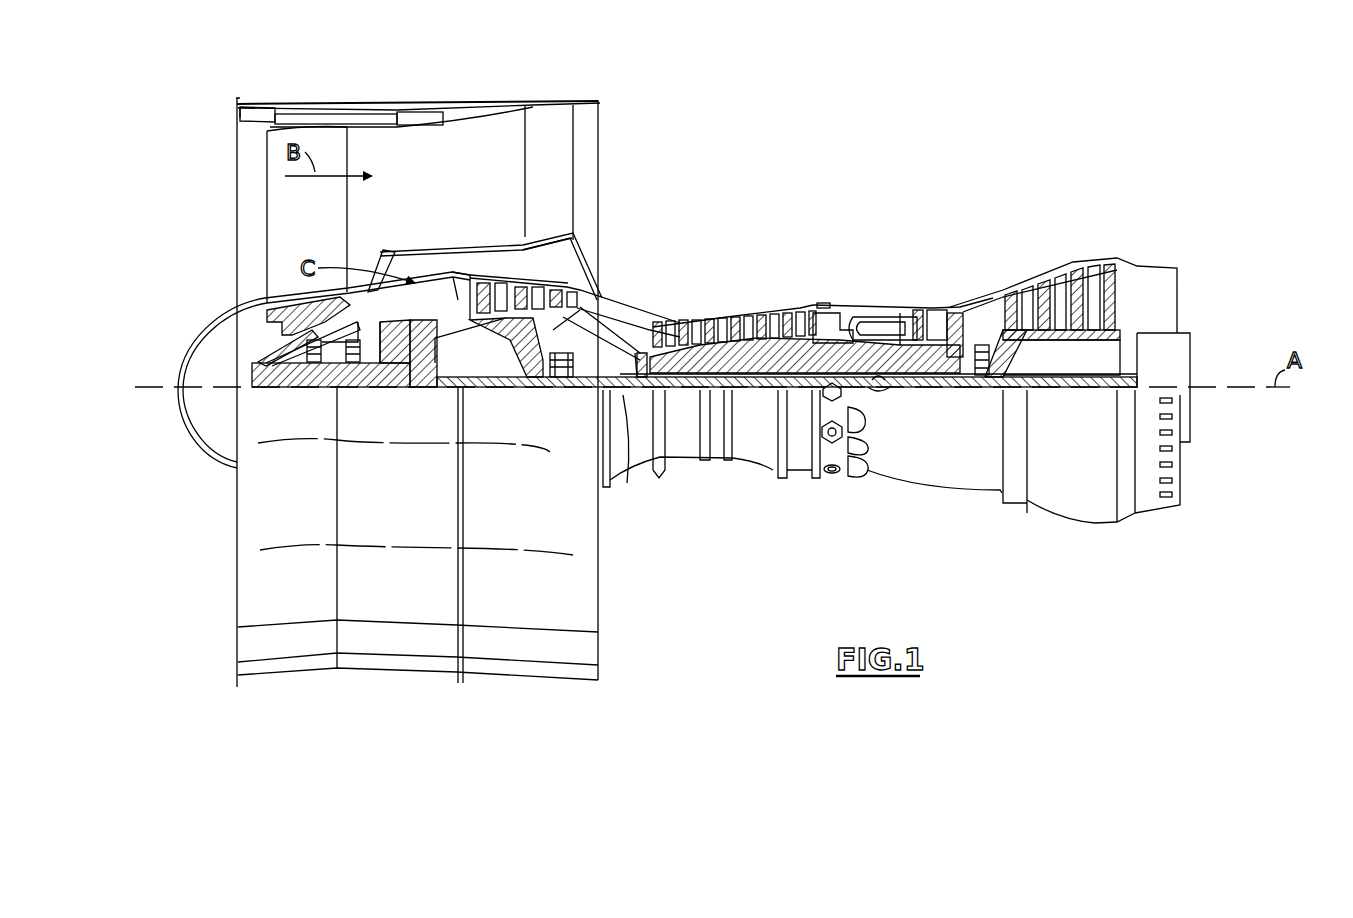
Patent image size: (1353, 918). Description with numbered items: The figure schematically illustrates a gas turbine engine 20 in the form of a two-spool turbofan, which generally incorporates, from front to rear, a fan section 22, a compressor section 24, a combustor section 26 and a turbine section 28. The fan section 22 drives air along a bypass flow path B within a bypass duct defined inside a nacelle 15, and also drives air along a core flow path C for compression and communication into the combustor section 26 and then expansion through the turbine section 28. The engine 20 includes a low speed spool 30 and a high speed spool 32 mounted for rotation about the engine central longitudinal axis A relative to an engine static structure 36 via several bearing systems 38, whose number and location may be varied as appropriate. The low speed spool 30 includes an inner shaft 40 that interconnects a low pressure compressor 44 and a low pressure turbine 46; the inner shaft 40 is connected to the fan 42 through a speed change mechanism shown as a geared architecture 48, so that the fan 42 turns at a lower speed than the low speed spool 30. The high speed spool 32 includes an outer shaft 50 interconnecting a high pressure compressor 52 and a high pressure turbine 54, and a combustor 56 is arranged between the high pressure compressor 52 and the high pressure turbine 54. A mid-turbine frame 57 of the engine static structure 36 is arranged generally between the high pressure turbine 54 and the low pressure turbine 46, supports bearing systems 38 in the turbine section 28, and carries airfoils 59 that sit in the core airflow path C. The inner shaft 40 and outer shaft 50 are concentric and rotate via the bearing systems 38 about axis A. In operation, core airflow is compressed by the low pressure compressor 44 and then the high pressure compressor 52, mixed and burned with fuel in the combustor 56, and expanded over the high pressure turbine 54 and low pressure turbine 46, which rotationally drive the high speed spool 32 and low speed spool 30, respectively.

The nacelle 15 is at (418, 106).
The gas turbine engine 20 is at (880, 150).
The fan section 22 is at (345, 90).
The compressor section 24 is at (655, 293).
The combustor section 26 is at (875, 280).
The turbine section 28 is at (1022, 243).
The low speed spool 30 is at (756, 395).
The high speed spool 32 is at (800, 328).
The engine static structure 36 is at (797, 478).
The bearing systems 38 is at (560, 378).
The inner shaft 40 is at (625, 403).
The fan 42 is at (318, 232).
The low pressure compressor 44 is at (520, 290).
The low pressure turbine 46 is at (1067, 268).
The geared architecture 48 is at (425, 370).
The outer shaft 50 is at (878, 392).
The high pressure compressor 52 is at (718, 330).
The high pressure turbine 54 is at (948, 320).
The combustor 56 is at (878, 328).
The mid-turbine frame 57 is at (985, 297).
The airfoils 59 is at (1005, 347).